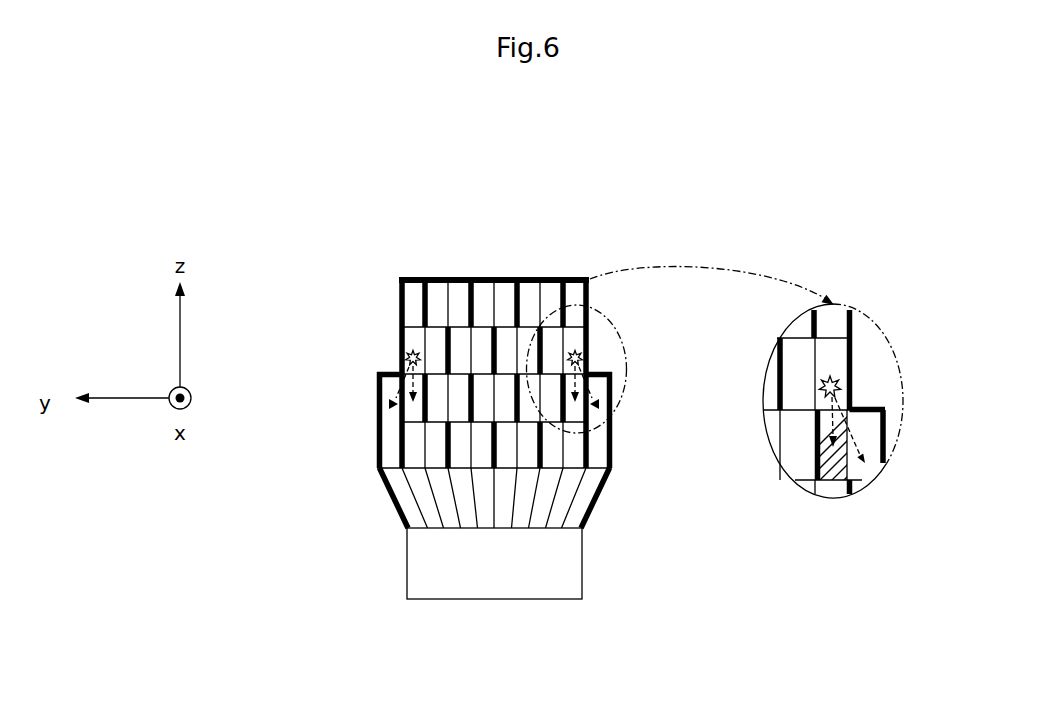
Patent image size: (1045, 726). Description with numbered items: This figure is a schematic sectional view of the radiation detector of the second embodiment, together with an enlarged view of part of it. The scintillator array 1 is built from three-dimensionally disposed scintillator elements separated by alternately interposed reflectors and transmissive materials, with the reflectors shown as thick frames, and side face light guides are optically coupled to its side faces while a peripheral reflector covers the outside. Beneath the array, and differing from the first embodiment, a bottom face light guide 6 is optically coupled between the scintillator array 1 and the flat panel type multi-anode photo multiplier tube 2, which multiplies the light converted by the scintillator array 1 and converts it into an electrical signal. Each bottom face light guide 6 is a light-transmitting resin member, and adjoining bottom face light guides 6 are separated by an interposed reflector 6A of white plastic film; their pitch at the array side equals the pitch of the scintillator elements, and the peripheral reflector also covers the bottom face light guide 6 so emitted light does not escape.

The scintillator array 1 is at (465, 345).
The flat panel type multi-anode photo multiplier tube 2 is at (582, 562).
The bottom face light guide 6 is at (457, 489).
The reflector 6A is at (418, 515).